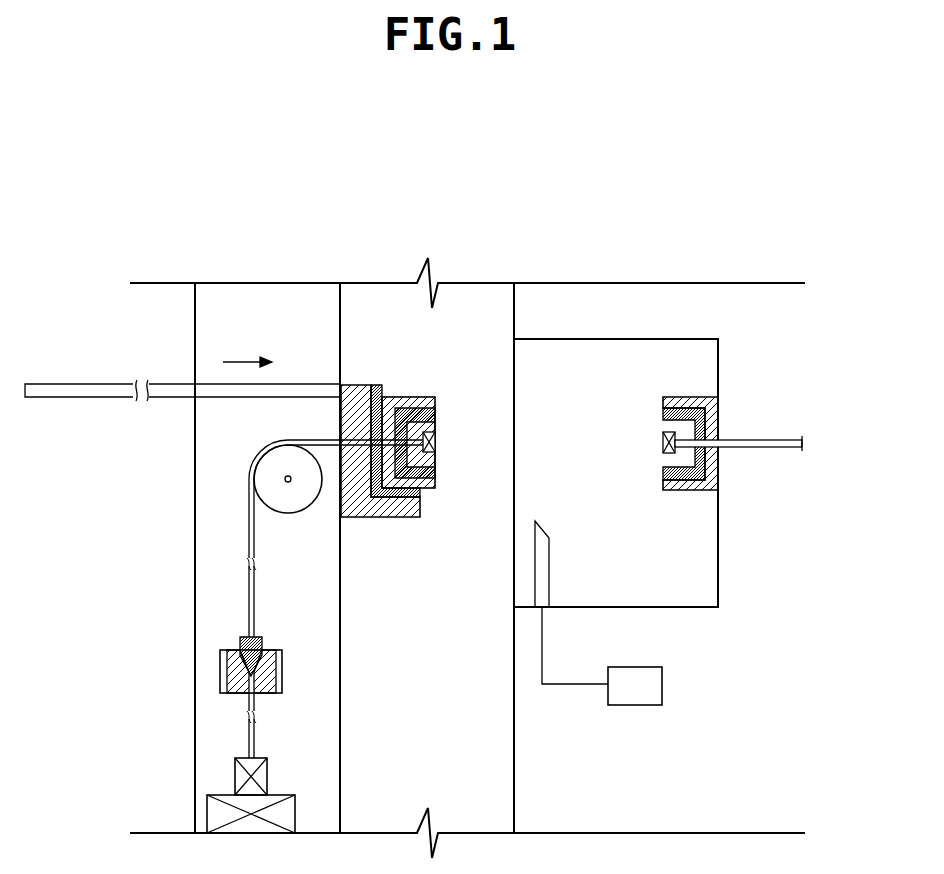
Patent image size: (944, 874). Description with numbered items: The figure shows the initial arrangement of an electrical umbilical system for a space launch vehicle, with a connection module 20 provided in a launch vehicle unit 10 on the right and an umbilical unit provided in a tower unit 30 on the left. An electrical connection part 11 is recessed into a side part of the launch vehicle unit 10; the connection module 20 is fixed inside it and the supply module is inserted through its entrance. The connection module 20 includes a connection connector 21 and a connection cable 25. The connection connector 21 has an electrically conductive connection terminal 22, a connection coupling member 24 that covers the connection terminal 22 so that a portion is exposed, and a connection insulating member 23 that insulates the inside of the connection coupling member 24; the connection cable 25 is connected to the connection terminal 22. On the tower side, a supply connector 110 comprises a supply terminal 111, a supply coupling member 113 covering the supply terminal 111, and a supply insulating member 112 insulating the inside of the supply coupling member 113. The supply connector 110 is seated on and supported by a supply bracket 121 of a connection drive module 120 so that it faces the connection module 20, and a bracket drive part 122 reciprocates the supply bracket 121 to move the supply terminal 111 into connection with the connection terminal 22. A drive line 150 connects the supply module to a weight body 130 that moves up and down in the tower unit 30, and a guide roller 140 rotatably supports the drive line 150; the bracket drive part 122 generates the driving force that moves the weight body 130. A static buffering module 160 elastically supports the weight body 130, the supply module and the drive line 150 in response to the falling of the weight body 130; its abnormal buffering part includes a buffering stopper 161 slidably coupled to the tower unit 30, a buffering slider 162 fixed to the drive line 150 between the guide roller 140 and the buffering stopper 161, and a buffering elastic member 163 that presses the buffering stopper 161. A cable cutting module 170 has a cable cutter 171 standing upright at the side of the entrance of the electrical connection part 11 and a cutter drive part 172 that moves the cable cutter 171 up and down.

The launch vehicle unit 10 is at (599, 266).
The electrical connection part 11 is at (630, 367).
The connection module 20 is at (766, 397).
The connection connector 21 is at (743, 397).
The connection terminal 22 is at (663, 435).
The connection insulating member 23 is at (680, 410).
The connection coupling member 24 is at (713, 413).
The connection cable 25 is at (750, 440).
The tower unit 30 is at (230, 268).
The supply connector 110 is at (499, 430).
The supply terminal 111 is at (436, 445).
The supply insulating member 112 is at (436, 413).
The supply coupling member 113 is at (436, 402).
The connection drive module 120 is at (222, 350).
The supply bracket 121 is at (352, 385).
The bracket drive part 122 is at (311, 390).
The weight body 130 is at (238, 775).
The guide roller 140 is at (285, 479).
The drive line 150 is at (250, 532).
The static buffering module 160 is at (378, 385).
The buffering stopper 161 is at (240, 645).
The buffering slider 162 is at (232, 665).
The buffering elastic member 163 is at (221, 683).
The cable cutting module 170 is at (669, 613).
The cable cutter 171 is at (549, 567).
The cutter drive part 172 is at (755, 632).